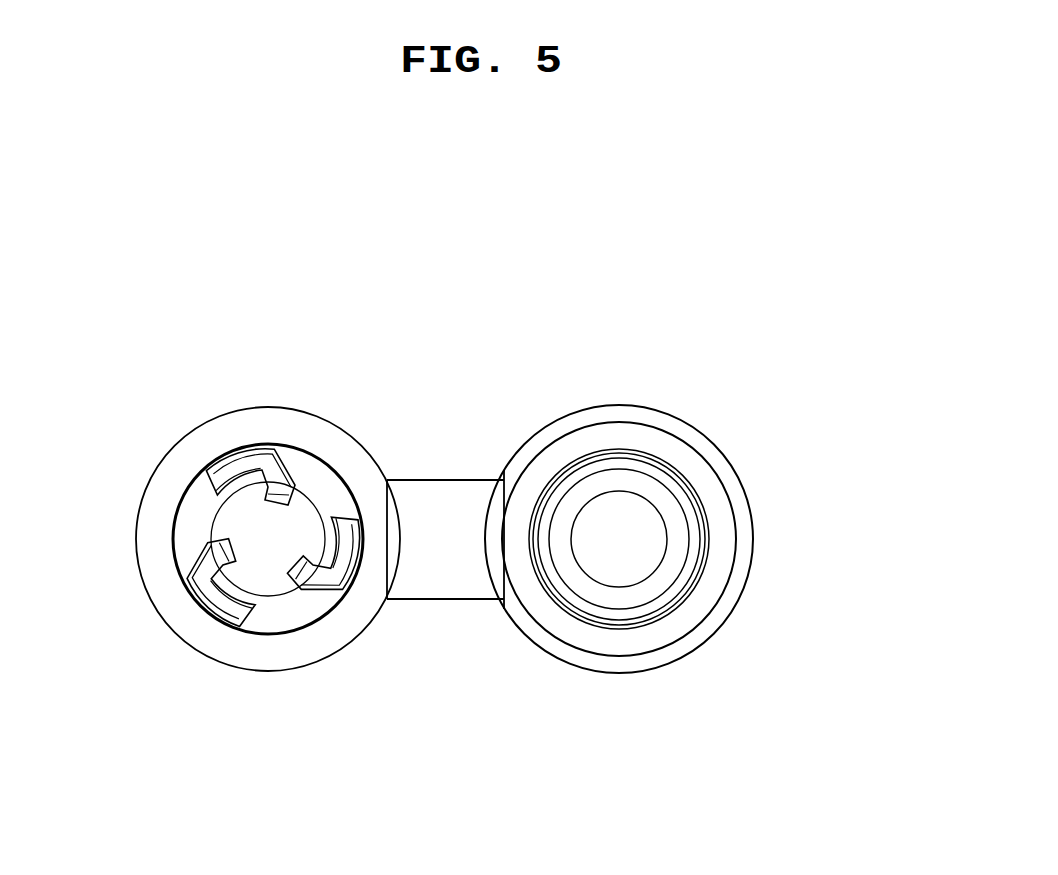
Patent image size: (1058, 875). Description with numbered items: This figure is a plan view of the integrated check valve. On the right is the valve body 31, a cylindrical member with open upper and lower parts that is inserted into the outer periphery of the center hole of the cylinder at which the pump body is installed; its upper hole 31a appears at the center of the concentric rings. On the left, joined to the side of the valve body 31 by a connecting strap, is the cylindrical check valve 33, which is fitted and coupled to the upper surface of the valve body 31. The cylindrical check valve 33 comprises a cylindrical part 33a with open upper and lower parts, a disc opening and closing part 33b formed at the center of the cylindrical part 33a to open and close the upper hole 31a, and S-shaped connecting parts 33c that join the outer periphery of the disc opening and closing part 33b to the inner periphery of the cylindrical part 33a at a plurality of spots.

The valve body 31 is at (707, 458).
The upper hole 31a is at (627, 494).
The cylindrical check valve 33 is at (293, 372).
The cylindrical part 33a is at (218, 425).
The disc opening and closing part 33b is at (272, 580).
The S-shaped connecting parts 33c is at (273, 471).